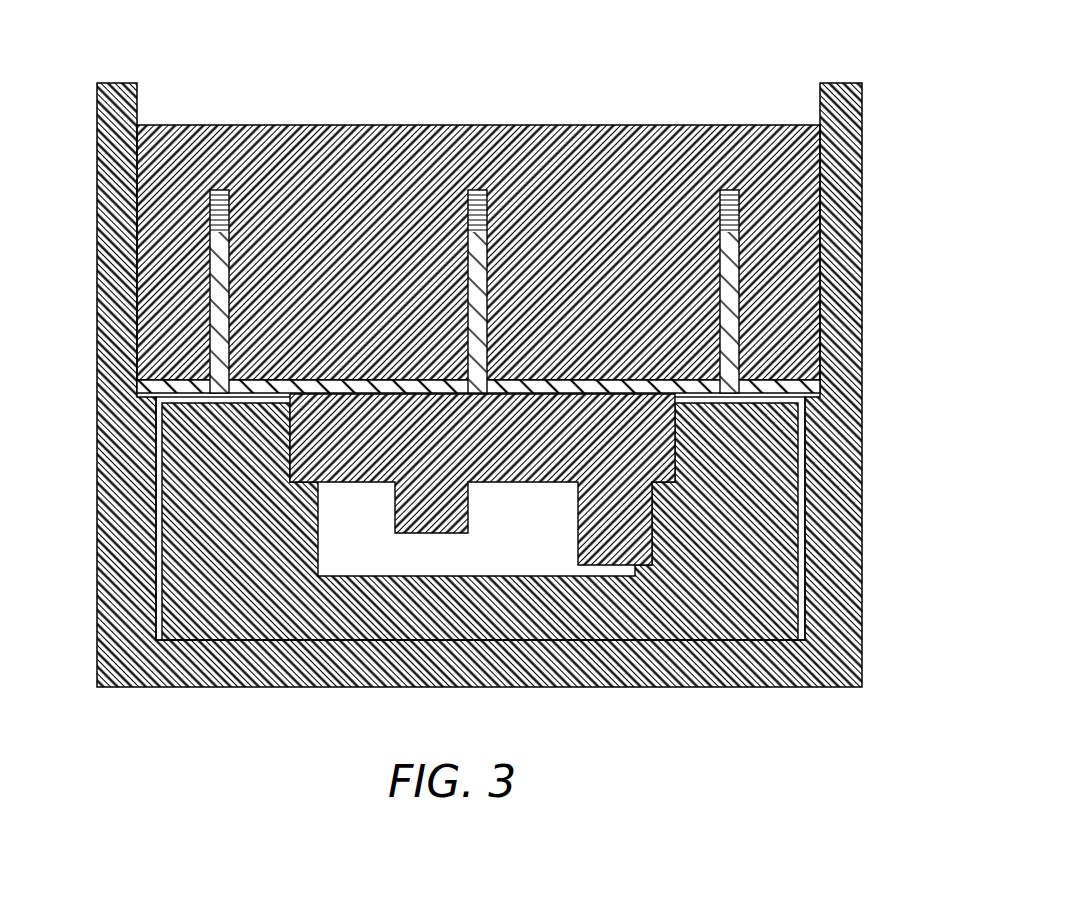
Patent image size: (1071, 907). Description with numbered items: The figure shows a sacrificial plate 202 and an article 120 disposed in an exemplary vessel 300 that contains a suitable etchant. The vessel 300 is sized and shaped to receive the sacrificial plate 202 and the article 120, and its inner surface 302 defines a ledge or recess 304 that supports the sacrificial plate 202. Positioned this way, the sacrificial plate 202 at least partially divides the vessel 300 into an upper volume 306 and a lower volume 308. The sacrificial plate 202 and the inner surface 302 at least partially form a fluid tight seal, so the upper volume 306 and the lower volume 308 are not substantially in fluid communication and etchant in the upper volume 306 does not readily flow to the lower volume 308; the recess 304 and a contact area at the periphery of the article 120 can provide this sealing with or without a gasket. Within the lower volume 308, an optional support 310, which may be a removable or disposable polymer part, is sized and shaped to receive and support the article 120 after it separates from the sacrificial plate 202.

The vessel 300 is at (485, 378).
The inner surface 302 is at (820, 102).
The ledge or recess 304 is at (825, 393).
The upper volume 306 is at (258, 126).
The lower volume 308 is at (416, 574).
The support 310 is at (345, 605).
The sacrificial plate 202 is at (604, 378).
The article 120 is at (356, 452).